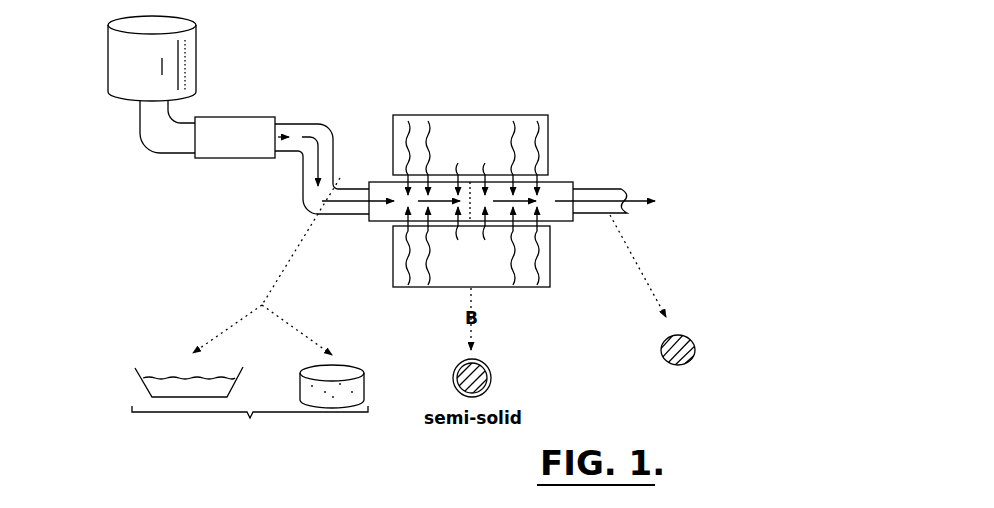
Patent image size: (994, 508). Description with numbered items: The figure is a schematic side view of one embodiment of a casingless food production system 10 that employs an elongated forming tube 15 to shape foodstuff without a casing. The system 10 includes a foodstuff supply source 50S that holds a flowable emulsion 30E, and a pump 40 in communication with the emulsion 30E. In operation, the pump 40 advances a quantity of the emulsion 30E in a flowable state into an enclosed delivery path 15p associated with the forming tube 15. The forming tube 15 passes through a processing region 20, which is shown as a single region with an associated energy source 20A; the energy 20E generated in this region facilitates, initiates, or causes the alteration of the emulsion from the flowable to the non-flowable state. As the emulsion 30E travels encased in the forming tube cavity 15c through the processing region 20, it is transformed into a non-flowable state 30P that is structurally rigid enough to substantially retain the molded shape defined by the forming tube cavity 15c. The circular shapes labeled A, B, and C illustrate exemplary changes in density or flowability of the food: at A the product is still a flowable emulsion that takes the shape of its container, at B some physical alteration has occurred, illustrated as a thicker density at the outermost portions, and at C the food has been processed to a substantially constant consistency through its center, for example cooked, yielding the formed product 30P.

The casingless food production system 10 is at (580, 73).
The forming tube 15 is at (562, 183).
The forming tube cavity 15c is at (580, 192).
The enclosed delivery path 15p is at (296, 184).
The processing region 20 is at (418, 120).
The energy source 20A is at (527, 120).
The energy 20E is at (410, 168).
The flowable emulsion 30E is at (250, 337).
The non-flowable state 30P is at (688, 333).
The pump 40 is at (242, 117).
The foodstuff supply source 50S is at (197, 50).